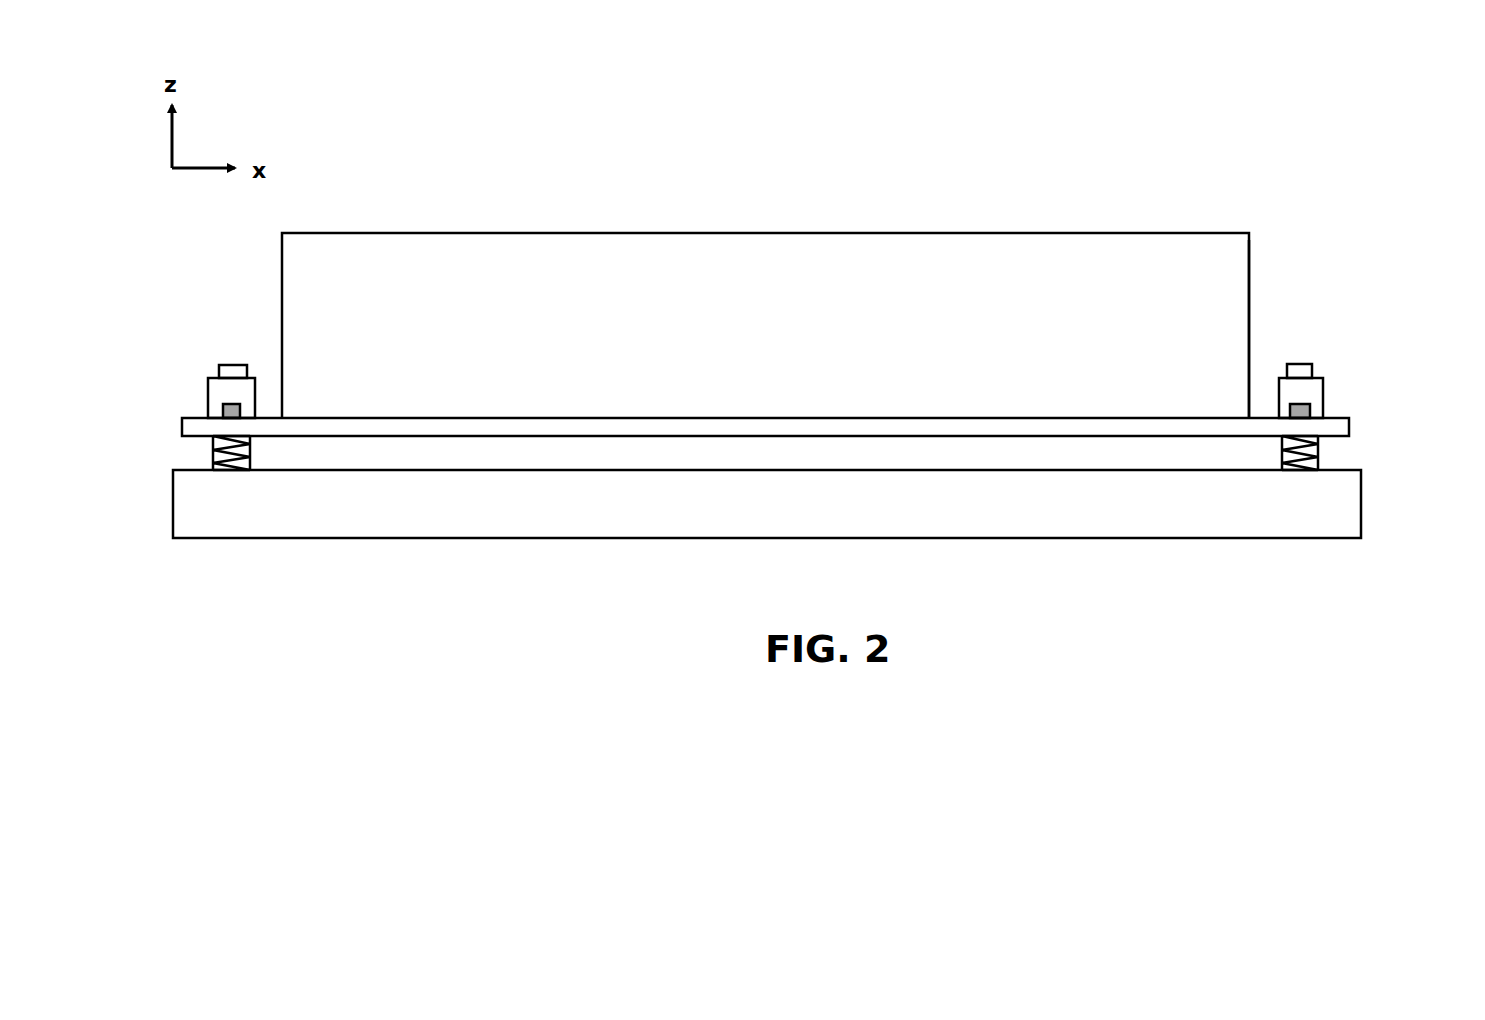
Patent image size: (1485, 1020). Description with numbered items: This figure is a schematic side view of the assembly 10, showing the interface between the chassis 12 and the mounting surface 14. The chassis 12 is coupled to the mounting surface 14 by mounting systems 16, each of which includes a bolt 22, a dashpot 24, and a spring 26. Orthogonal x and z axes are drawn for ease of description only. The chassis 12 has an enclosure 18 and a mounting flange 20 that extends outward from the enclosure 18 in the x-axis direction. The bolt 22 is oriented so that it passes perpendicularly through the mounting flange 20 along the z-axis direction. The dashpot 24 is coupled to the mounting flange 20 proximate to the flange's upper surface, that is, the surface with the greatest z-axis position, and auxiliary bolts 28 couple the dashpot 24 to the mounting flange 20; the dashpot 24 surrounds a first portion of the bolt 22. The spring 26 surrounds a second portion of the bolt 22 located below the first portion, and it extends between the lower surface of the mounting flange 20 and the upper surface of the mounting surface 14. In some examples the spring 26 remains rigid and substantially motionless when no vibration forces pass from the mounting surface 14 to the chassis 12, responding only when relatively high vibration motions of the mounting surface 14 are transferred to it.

The assembly 10 is at (928, 160).
The chassis 12 is at (1145, 226).
The mounting surface 14 is at (1352, 515).
The mounting system 16 is at (1363, 383).
The enclosure 18 is at (1238, 290).
The mounting flange 20 is at (1345, 424).
The bolt 22 is at (1305, 362).
The dashpot 24 is at (1312, 388).
The spring 26 is at (1316, 456).
The auxiliary bolt 28 is at (1305, 404).